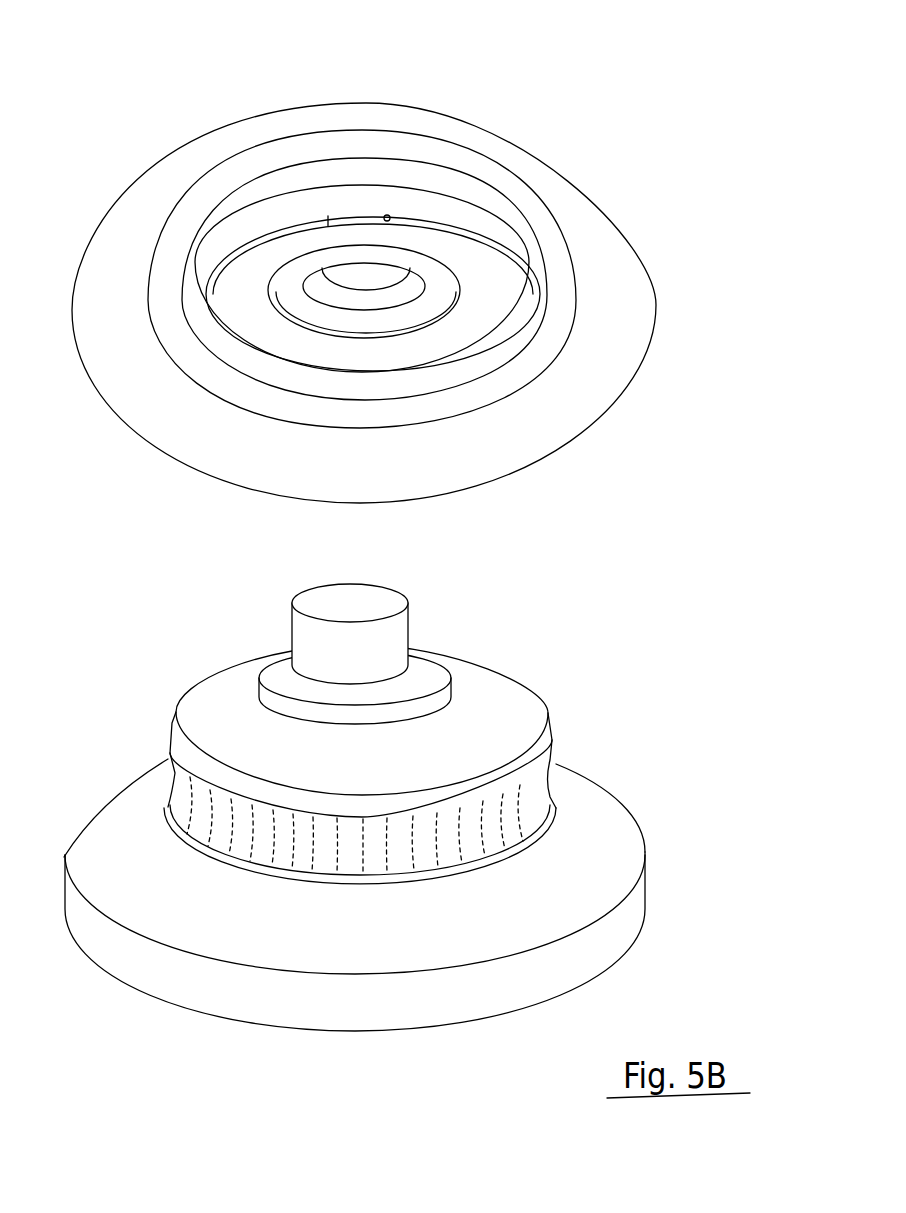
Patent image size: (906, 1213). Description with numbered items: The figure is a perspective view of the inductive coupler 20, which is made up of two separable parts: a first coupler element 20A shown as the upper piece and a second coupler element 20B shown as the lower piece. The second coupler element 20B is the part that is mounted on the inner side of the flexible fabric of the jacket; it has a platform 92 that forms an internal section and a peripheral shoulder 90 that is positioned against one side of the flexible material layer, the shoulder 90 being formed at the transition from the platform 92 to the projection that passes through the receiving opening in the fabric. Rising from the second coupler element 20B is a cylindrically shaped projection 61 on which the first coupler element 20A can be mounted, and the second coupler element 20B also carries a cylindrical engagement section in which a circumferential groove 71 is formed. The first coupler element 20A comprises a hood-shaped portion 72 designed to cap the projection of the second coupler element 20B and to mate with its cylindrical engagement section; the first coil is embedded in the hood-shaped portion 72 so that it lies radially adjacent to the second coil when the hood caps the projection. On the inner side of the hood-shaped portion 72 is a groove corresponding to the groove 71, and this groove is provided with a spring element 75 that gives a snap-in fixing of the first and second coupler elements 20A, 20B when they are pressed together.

The inductive coupler 20 is at (548, 31).
The first coupler element 20A is at (665, 264).
The second coupler element 20B is at (657, 830).
The cylindrically shaped projection 61 is at (397, 632).
The circumferential groove 71 is at (553, 763).
The hood-shaped portion 72 is at (527, 368).
The spring element 75 is at (457, 233).
The peripheral shoulder 90 is at (202, 946).
The platform 92 is at (648, 929).